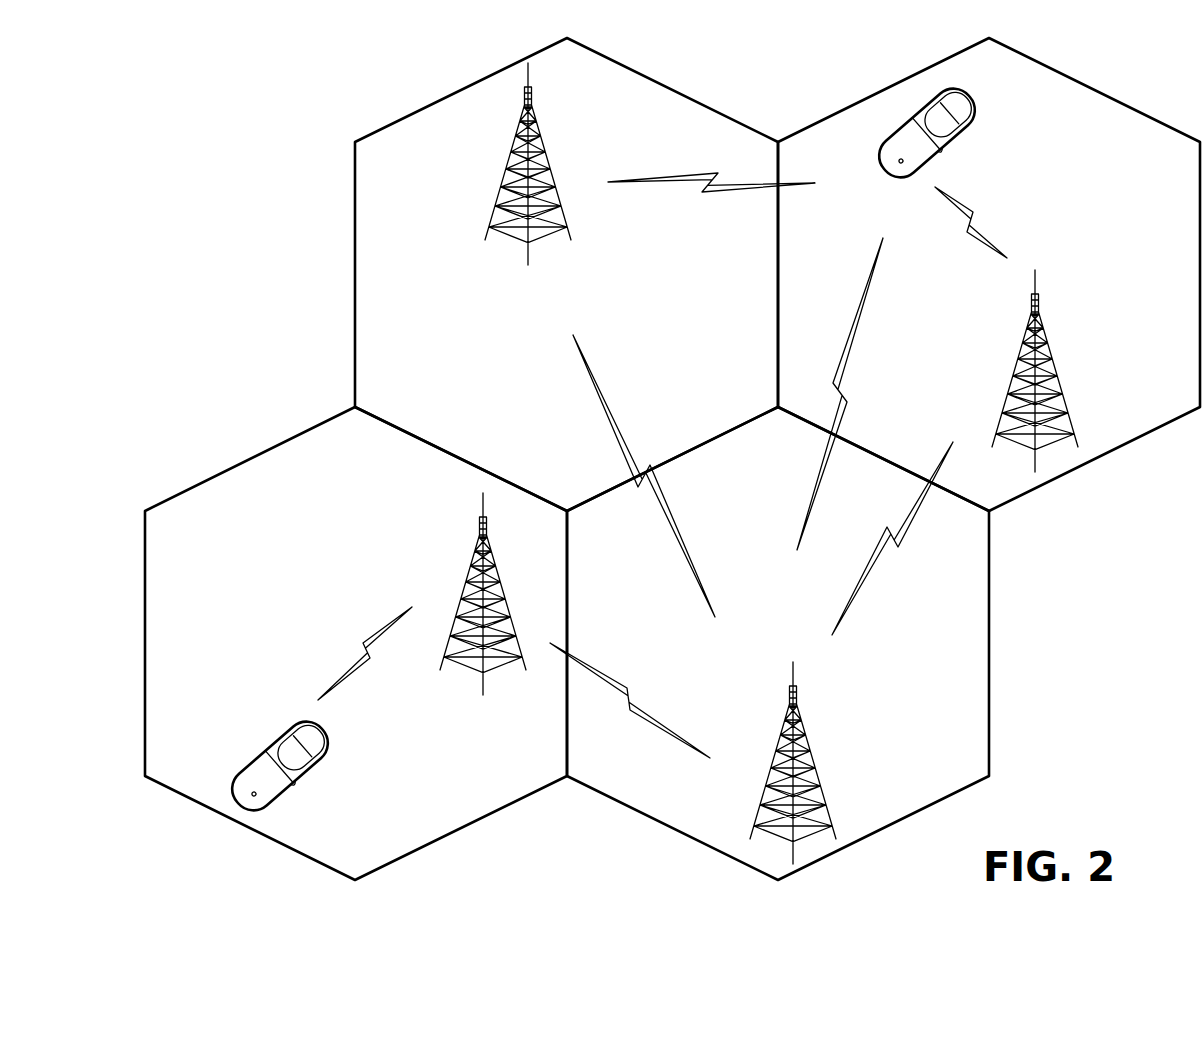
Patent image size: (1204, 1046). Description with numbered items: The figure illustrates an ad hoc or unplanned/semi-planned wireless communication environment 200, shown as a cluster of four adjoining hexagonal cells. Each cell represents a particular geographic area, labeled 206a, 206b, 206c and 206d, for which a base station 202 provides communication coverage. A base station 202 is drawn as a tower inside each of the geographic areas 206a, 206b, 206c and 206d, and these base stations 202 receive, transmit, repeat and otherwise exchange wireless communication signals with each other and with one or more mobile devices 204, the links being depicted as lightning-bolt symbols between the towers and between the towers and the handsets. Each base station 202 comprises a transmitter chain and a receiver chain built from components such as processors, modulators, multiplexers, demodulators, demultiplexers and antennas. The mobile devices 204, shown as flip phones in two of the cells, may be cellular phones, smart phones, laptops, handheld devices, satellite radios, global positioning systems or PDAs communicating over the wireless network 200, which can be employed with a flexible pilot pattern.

The wireless communication environment 200 is at (231, 116).
The base station 202 is at (513, 153).
The mobile device 204 is at (938, 153).
The geographic area 206a is at (618, 60).
The geographic area 206b is at (1095, 88).
The geographic area 206c is at (233, 463).
The geographic area 206d is at (990, 633).